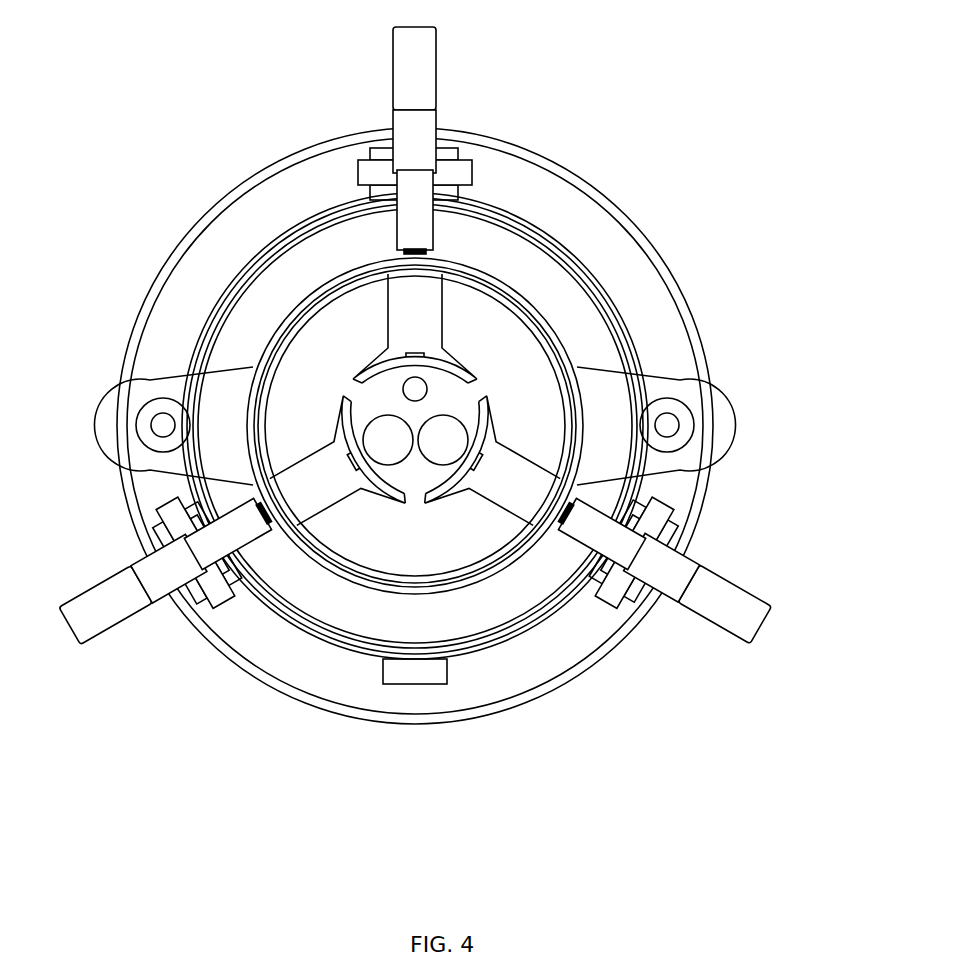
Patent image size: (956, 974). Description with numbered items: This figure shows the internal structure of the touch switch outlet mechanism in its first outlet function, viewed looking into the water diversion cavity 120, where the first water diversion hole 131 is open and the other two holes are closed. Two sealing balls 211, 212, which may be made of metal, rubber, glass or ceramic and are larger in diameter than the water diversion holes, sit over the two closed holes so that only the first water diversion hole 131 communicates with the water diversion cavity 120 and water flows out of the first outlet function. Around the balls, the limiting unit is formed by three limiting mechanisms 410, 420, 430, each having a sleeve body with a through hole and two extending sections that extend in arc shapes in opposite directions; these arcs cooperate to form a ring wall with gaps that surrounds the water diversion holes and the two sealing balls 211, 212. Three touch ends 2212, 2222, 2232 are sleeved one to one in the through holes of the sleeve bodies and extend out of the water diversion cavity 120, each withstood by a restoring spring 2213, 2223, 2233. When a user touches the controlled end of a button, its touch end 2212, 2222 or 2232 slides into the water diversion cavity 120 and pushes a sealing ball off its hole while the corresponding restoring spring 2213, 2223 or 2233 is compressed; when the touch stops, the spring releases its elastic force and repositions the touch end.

The water diversion cavity 120 is at (330, 327).
The first water diversion hole 131 is at (414, 388).
The sealing ball 211 is at (385, 450).
The sealing ball 212 is at (443, 450).
The limiting mechanism 410 is at (418, 312).
The limiting mechanism 420 is at (510, 487).
The limiting mechanism 430 is at (313, 457).
The touch end 2212 is at (420, 80).
The restoring spring 2213 is at (405, 248).
The touch end 2222 is at (708, 577).
The restoring spring 2223 is at (565, 523).
The touch end 2232 is at (143, 567).
The restoring spring 2233 is at (265, 525).